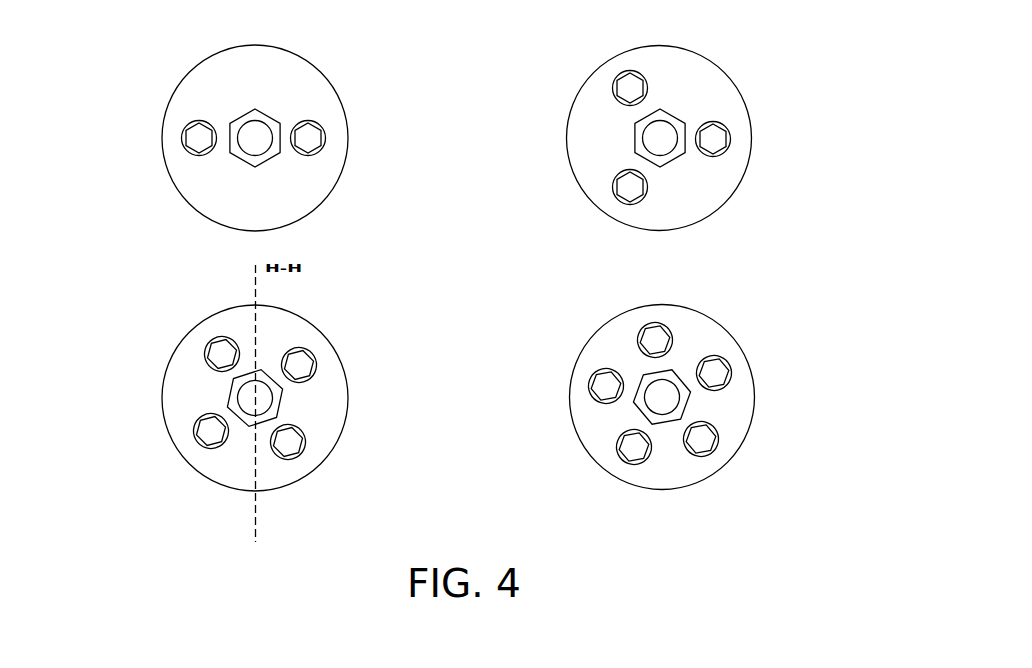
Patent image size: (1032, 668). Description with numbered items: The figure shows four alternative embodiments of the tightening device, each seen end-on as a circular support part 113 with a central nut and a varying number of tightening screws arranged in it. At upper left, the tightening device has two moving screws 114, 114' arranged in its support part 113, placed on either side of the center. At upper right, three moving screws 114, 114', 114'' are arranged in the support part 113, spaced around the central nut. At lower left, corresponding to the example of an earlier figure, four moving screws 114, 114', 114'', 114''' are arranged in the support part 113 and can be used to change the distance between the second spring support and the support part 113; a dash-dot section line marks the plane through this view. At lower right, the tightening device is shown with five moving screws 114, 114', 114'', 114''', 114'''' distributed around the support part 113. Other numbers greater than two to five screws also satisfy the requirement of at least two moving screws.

The support part 113 is at (300, 75).
The moving screw 114 is at (536, 243).
The moving screw 114' is at (460, 292).
The moving screw 114'' is at (427, 242).
The moving screw 114''' is at (380, 364).
The moving screw 114'''' is at (593, 458).